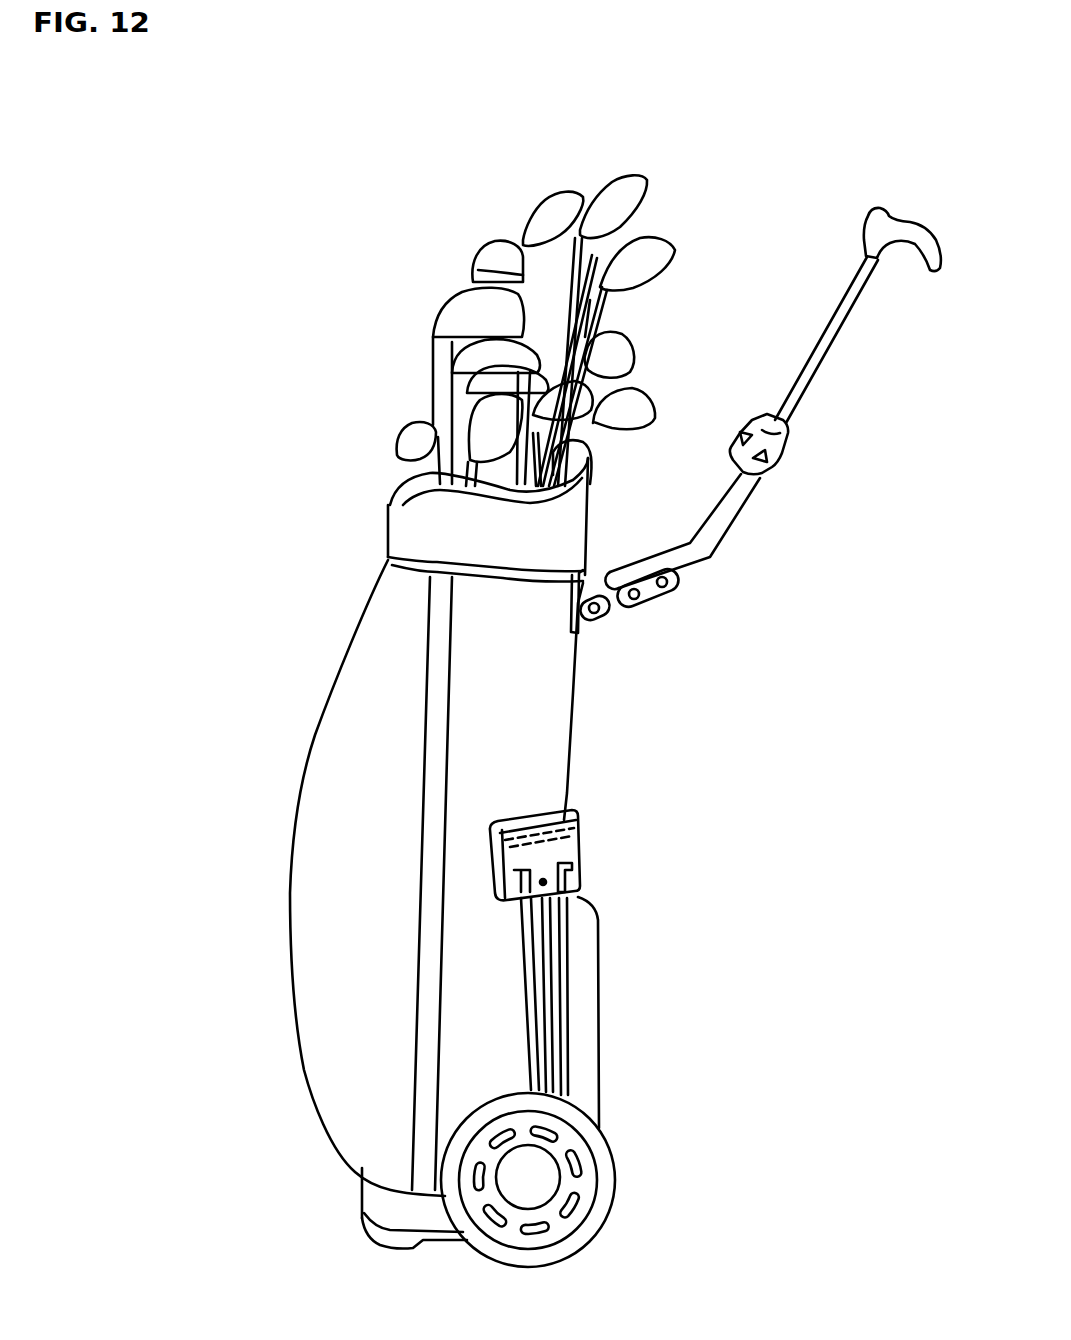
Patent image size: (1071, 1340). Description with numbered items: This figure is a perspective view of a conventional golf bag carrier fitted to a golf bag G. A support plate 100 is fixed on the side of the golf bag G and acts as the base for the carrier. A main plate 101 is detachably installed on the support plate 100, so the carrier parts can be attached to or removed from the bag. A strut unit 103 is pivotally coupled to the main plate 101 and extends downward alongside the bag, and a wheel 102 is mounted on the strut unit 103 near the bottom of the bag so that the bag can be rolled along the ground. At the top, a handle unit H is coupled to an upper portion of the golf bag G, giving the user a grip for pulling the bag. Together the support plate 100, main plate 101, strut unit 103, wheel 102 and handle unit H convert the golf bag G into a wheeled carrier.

The golf bag G is at (340, 898).
The handle unit H is at (740, 498).
The support plate 100 is at (570, 810).
The main plate 101 is at (577, 847).
The wheel 102 is at (612, 1168).
The strut unit 103 is at (580, 993).